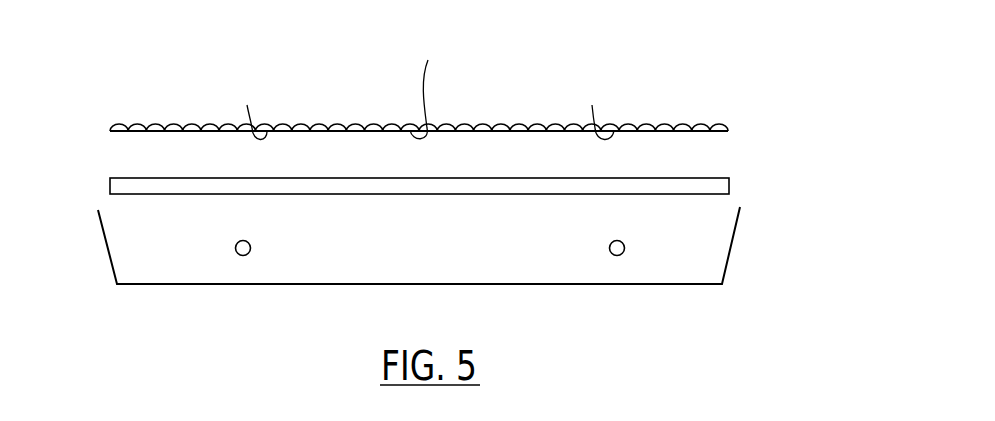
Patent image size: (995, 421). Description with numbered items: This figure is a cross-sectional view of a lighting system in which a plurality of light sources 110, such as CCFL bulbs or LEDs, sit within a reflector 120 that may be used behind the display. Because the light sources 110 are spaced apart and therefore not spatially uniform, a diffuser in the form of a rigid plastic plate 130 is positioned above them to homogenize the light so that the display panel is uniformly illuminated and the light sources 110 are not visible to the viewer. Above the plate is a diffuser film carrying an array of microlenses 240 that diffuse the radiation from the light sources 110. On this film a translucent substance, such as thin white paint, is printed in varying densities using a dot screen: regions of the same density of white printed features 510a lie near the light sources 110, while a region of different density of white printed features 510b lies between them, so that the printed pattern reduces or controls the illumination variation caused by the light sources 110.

The microlenses 240 is at (99, 121).
The rigid plastic plate 130 is at (104, 188).
The reflector 120 is at (702, 299).
The light sources 110 is at (250, 254).
The printed density of translucent substance 510a is at (238, 136).
The printed density of translucent substance 510b is at (391, 136).